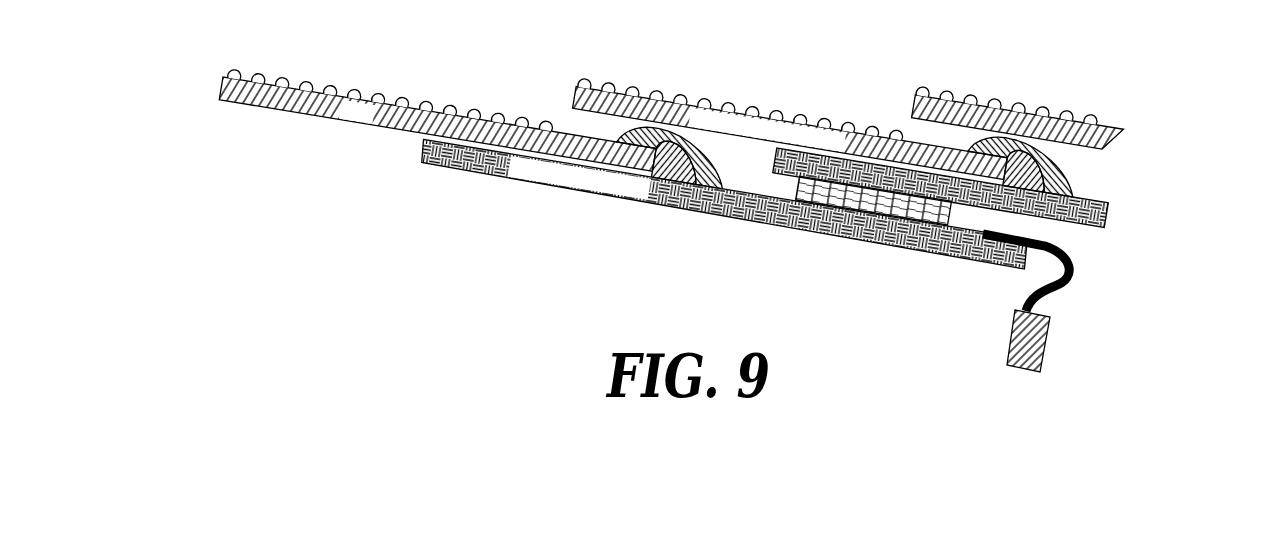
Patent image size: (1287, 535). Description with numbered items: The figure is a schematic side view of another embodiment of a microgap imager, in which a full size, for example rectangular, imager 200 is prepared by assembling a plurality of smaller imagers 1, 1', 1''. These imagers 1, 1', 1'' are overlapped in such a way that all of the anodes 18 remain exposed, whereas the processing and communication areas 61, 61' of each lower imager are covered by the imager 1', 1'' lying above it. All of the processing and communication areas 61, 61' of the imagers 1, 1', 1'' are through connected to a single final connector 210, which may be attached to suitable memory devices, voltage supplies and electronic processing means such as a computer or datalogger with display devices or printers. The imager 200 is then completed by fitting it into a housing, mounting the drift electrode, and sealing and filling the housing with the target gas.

The imager 1 is at (437, 93).
The imager 1' is at (789, 102).
The imager 1'' is at (1018, 94).
The anodes 18 is at (234, 71).
The processing and communication area 61 is at (608, 106).
The processing and communication area 61' is at (973, 115).
The imager 200 is at (1152, 182).
The final connector 210 is at (1048, 333).